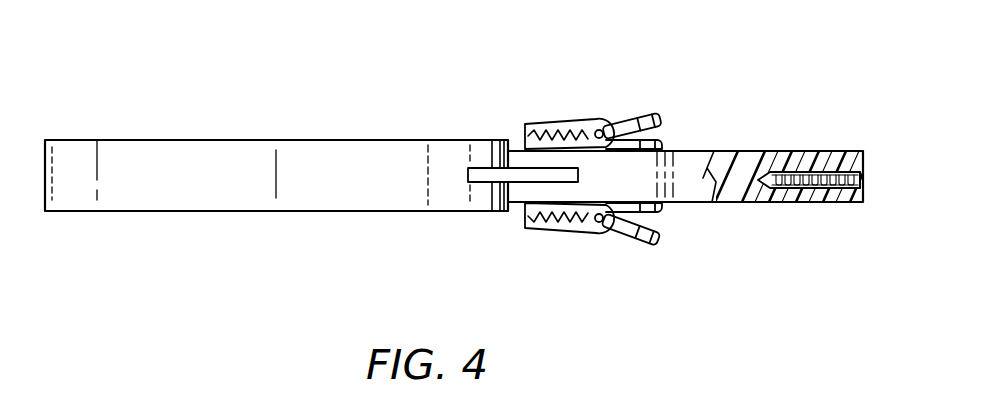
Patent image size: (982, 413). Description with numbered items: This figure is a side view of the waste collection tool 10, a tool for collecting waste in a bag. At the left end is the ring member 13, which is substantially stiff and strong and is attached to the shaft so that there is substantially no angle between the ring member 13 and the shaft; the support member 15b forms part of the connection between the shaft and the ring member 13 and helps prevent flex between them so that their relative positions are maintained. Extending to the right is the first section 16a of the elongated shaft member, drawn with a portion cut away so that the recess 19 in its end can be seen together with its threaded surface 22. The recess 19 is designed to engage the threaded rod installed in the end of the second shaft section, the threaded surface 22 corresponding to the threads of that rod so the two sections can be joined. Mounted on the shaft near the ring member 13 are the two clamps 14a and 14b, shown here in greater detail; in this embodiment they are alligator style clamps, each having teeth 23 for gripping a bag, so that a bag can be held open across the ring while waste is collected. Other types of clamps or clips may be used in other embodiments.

The tool 10 is at (546, 62).
The ring member 13 is at (125, 163).
The clamp 14a is at (657, 110).
The clamp 14b is at (662, 247).
The support member 15b is at (520, 207).
The first section 16a is at (747, 162).
The recess 19 is at (818, 170).
The threaded surface 22 is at (859, 179).
The teeth 23 is at (555, 128).